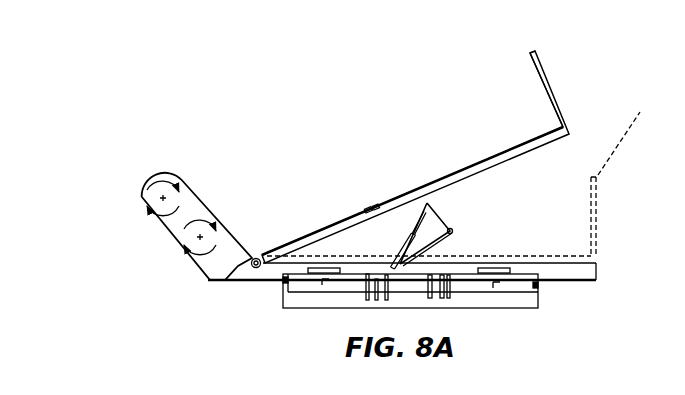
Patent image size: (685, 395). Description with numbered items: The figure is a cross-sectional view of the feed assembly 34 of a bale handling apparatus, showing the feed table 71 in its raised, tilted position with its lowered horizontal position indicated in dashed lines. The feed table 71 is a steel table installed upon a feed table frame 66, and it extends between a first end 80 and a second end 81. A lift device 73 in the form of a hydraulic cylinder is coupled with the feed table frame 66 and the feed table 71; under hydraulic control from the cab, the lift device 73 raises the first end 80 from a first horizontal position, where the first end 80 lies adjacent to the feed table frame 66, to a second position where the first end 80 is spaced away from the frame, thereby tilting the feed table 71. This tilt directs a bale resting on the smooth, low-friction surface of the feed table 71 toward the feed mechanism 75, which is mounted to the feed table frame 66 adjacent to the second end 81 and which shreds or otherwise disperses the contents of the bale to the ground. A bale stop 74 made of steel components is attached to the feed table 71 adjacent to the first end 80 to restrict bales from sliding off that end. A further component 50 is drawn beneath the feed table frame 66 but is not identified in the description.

The feed assembly 34 is at (367, 172).
The base frame 50 is at (283, 293).
The feed table frame 66 is at (568, 273).
The feed table 71 is at (498, 252).
The lift device 73 is at (396, 250).
The bale stop 74 is at (548, 83).
The feed mechanism 75 is at (155, 173).
The first end 80 is at (517, 55).
The second end 81 is at (267, 213).